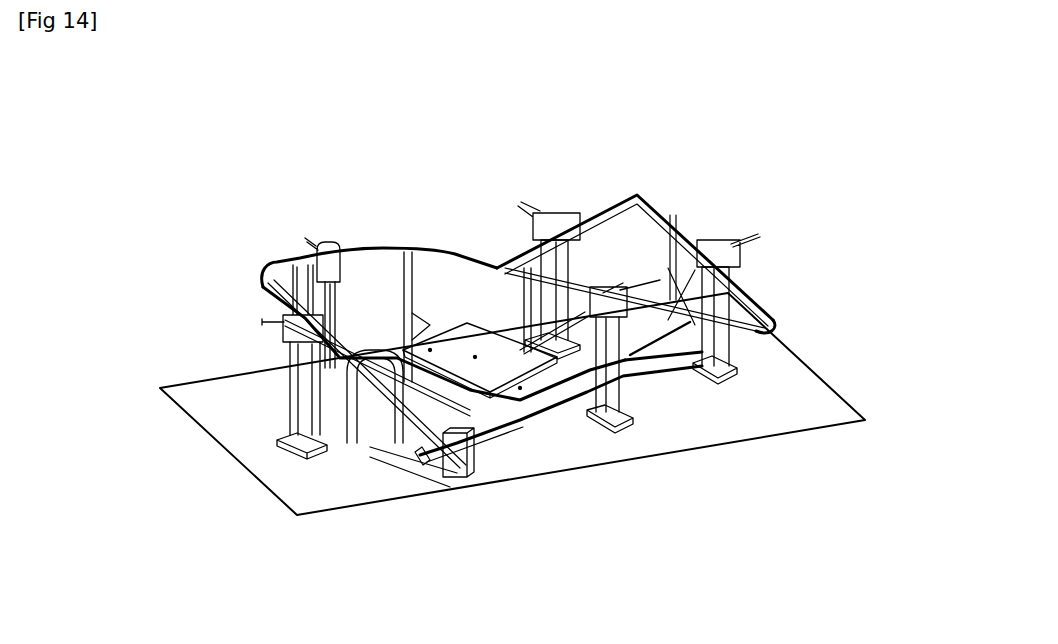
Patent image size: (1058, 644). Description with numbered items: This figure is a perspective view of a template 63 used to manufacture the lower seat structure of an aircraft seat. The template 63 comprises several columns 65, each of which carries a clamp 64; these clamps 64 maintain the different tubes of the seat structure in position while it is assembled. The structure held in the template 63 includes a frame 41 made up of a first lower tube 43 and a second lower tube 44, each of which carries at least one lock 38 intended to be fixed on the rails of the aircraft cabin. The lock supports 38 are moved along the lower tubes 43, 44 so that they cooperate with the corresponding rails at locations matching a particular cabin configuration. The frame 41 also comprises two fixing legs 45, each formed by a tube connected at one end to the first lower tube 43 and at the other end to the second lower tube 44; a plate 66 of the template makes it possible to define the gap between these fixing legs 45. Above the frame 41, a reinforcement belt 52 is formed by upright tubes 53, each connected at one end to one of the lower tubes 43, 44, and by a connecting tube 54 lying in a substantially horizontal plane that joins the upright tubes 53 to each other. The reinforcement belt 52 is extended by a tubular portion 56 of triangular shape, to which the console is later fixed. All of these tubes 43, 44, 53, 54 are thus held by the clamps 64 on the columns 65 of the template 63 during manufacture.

The lock 38 is at (292, 412).
The frame 41 is at (675, 382).
The first lower tube 43 is at (350, 493).
The second lower tube 44 is at (663, 298).
The fixing leg 45 is at (390, 423).
The reinforcement belt 52 is at (255, 266).
The upright tube 53 is at (517, 310).
The connecting tube 54 is at (327, 292).
The tubular portion 56 is at (657, 203).
The template 63 is at (770, 285).
The clamp 64 is at (318, 240).
The column 65 is at (420, 283).
The plate 66 is at (490, 373).